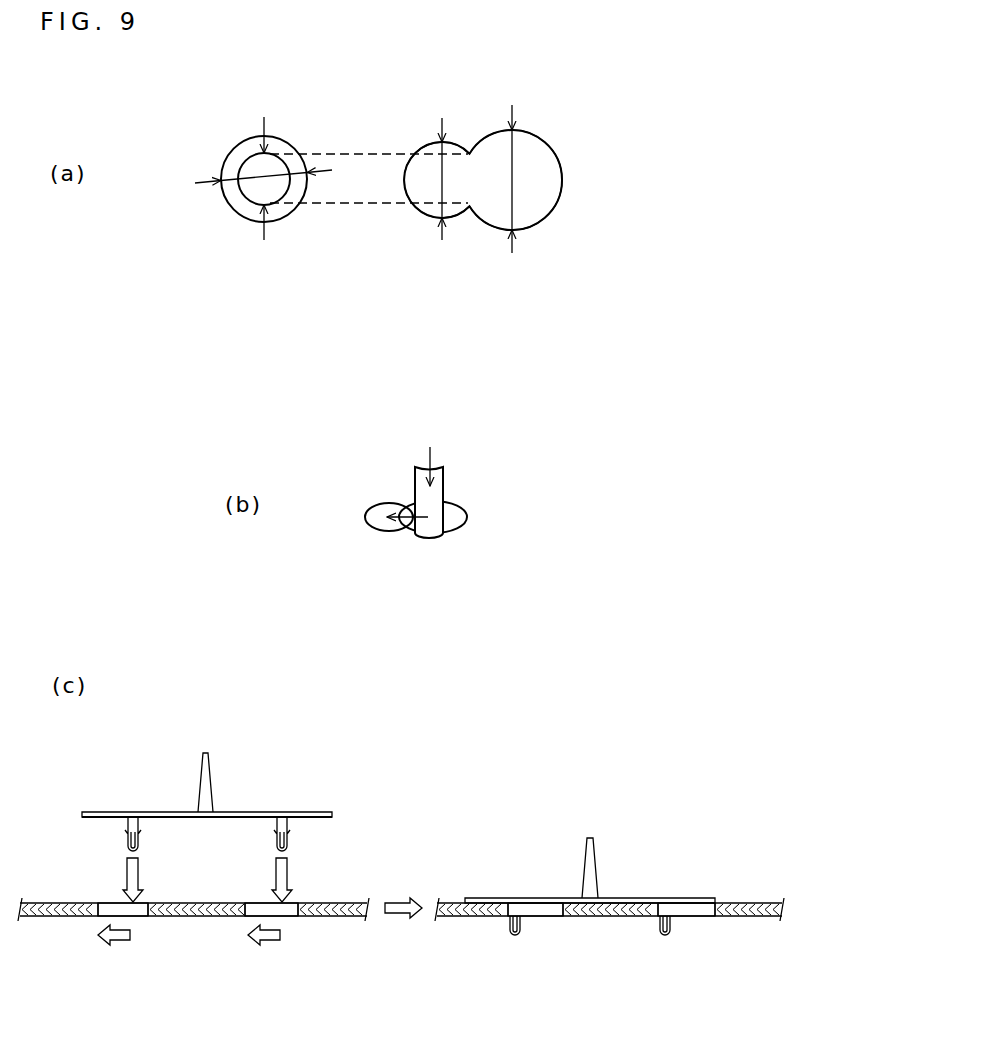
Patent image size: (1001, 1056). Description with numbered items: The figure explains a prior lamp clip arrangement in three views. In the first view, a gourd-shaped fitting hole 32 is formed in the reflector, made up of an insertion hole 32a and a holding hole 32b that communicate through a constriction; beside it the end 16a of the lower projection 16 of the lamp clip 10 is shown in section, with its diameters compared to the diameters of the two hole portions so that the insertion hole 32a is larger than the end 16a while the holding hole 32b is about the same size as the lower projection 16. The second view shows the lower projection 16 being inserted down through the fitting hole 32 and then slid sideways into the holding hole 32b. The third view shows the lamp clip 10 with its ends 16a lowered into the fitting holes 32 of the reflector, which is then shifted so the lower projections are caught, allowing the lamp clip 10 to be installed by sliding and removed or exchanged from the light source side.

The lamp clip 10 is at (231, 791).
The lower projection 16 is at (418, 490).
The end of the lower projection 16a is at (244, 148).
The fitting hole 32 is at (549, 141).
The insertion hole 32a is at (410, 180).
The holding hole 32b is at (547, 203).